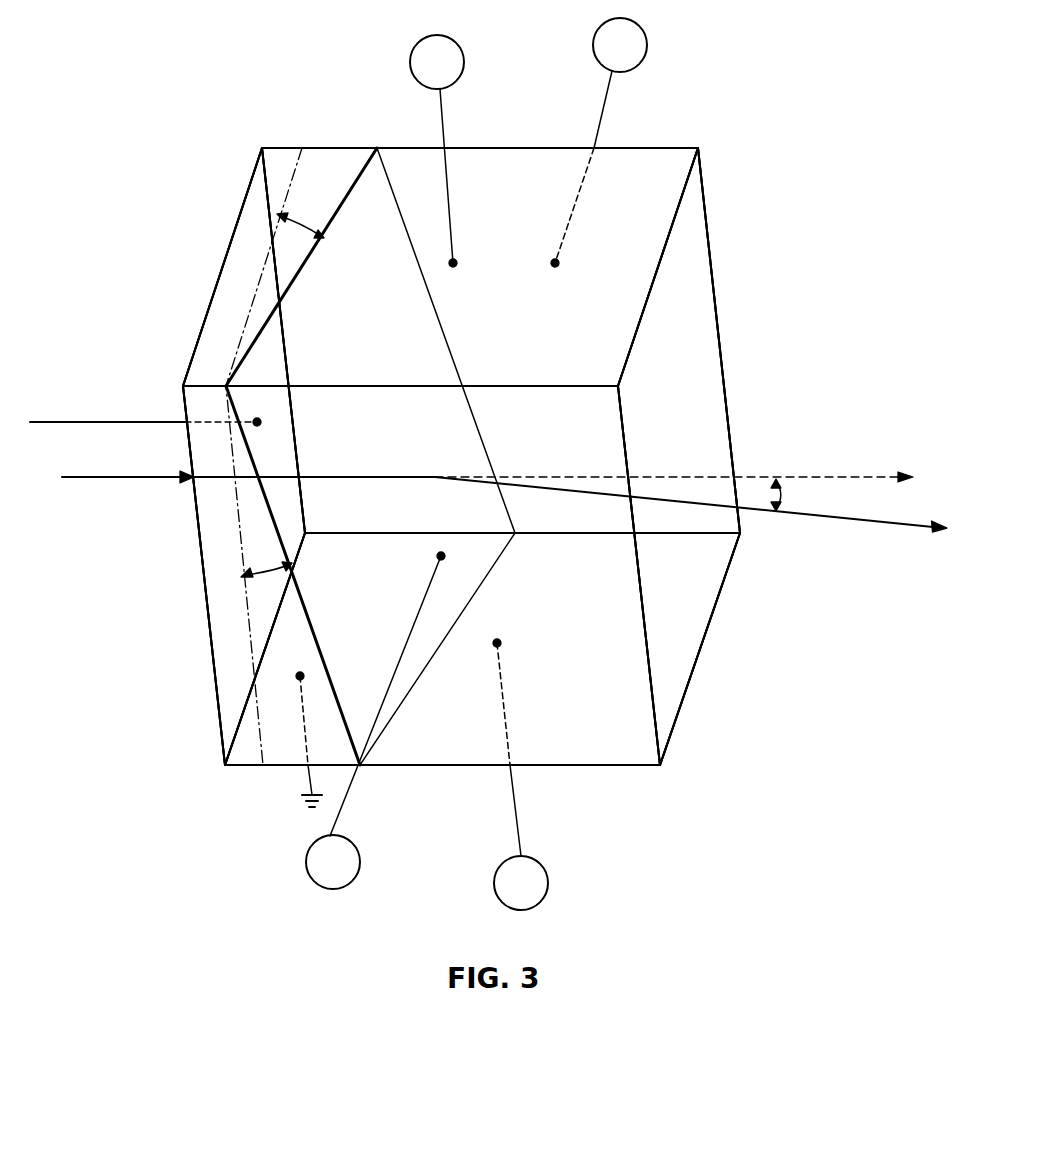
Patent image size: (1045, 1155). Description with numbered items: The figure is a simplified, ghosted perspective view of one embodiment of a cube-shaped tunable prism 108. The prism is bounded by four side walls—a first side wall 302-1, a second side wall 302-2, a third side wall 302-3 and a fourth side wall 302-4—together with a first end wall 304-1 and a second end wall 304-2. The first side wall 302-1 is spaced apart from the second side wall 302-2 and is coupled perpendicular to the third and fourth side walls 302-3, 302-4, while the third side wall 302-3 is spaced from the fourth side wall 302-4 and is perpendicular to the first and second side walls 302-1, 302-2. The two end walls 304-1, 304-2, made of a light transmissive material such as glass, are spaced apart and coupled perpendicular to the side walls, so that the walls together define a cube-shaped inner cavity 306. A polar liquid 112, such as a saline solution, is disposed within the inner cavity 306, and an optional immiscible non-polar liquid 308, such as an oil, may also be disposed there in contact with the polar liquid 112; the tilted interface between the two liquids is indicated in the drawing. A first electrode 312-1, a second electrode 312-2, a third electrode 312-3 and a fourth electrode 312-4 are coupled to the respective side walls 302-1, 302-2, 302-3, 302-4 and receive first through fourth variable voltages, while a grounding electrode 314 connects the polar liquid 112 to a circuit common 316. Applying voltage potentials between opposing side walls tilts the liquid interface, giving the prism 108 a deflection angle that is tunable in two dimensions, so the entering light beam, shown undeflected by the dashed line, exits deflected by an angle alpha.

The cube-shaped tunable prism 108 is at (222, 62).
The polar liquid 112 is at (314, 662).
The first side wall 302-1 is at (608, 725).
The second side wall 302-2 is at (502, 167).
The third side wall 302-3 is at (618, 627).
The fourth side wall 302-4 is at (615, 202).
The first end wall 304-1 is at (222, 268).
The second end wall 304-2 is at (697, 352).
The cube-shaped inner cavity 306 is at (585, 308).
The non-polar liquid 308 is at (574, 588).
The first electrode 312-1 is at (518, 810).
The second electrode 312-2 is at (440, 100).
The third electrode 312-3 is at (346, 803).
The fourth electrode 312-4 is at (618, 88).
The grounding electrode 314 is at (303, 728).
The circuit common 316 is at (310, 793).